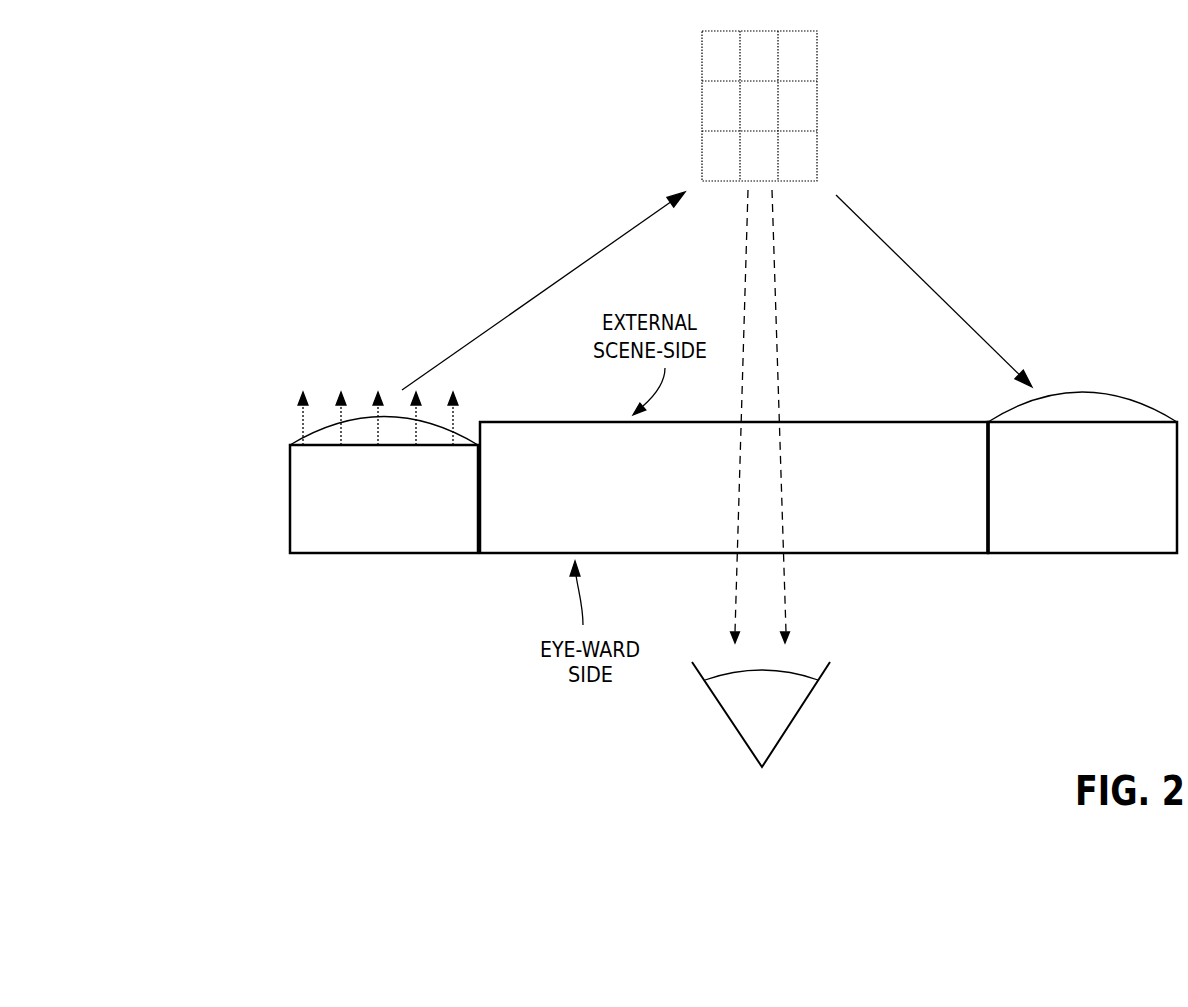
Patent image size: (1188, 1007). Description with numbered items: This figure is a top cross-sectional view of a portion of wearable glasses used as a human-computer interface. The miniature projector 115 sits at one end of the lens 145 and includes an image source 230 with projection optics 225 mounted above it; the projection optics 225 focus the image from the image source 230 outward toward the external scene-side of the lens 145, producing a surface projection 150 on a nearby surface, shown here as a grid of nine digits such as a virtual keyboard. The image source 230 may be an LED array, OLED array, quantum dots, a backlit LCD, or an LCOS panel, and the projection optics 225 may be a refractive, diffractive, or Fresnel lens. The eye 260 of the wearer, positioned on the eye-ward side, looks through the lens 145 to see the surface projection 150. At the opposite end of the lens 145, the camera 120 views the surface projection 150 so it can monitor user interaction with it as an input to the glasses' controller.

The surface projection 150 is at (838, 94).
The miniature projector 115 is at (284, 536).
The image source 230 is at (442, 523).
The projection optics 225 is at (284, 412).
The lens 145 is at (875, 503).
The camera 120 is at (1142, 496).
The eye 260 is at (778, 732).